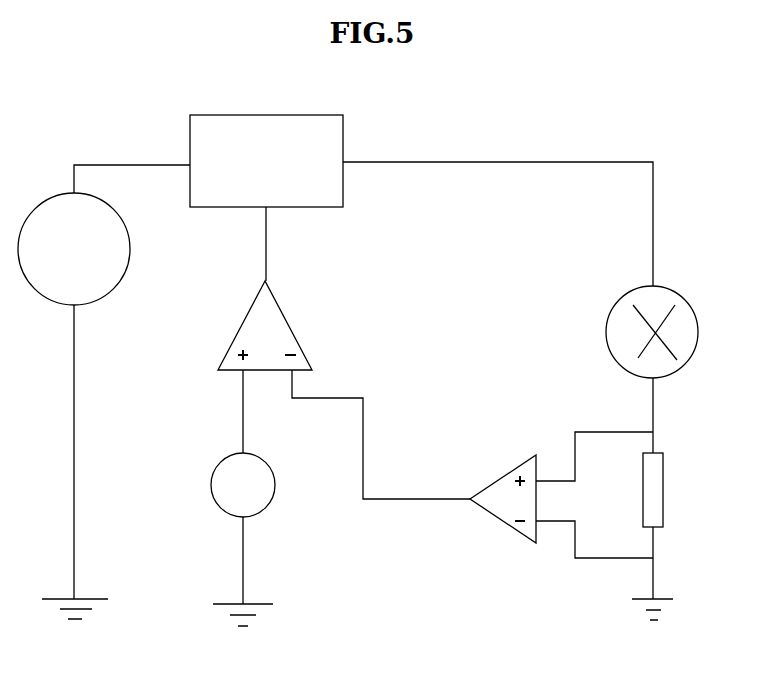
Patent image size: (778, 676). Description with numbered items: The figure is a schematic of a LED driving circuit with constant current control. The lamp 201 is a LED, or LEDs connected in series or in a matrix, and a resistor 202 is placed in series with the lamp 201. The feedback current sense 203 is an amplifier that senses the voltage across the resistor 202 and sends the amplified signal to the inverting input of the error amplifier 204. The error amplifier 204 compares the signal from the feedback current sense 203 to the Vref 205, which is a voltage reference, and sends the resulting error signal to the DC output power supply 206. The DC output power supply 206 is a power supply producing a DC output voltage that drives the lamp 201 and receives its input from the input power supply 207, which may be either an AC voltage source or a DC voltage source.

The lamp 201 is at (676, 332).
The resistor 202 is at (680, 490).
The feedback current sense 203 is at (503, 491).
The error amplifier 204 is at (275, 325).
The Vref 205 is at (264, 485).
The DC output power supply 206 is at (289, 161).
The input power supply 207 is at (92, 249).